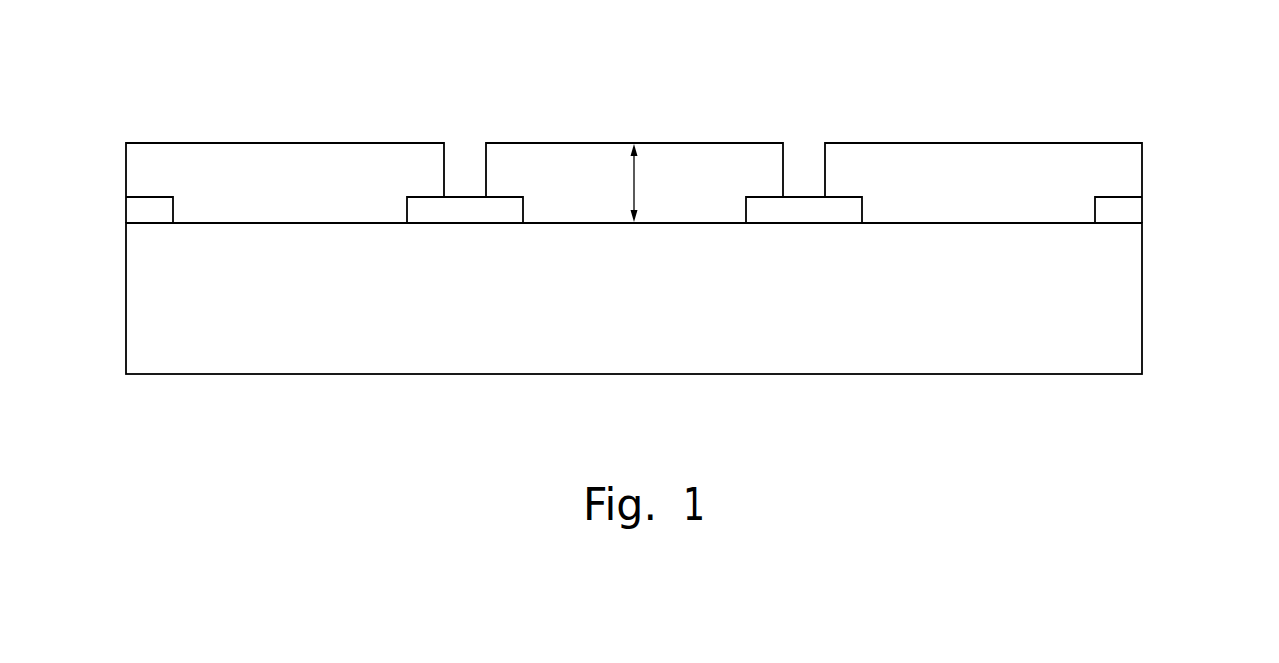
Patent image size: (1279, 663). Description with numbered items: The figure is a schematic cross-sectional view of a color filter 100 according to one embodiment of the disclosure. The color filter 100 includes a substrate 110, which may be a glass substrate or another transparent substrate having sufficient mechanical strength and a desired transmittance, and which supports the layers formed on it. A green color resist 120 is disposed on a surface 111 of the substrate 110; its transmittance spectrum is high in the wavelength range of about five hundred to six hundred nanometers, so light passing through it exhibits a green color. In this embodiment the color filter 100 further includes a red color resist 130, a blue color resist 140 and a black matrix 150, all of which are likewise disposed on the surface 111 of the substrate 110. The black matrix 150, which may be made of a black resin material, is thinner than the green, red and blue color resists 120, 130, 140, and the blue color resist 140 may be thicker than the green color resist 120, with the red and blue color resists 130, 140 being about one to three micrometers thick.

The color filter 100 is at (117, 66).
The substrate 110 is at (1119, 303).
The surface 111 is at (1029, 223).
The green color resist 120 is at (577, 162).
The red color resist 130 is at (263, 162).
The blue color resist 140 is at (888, 162).
The black matrix 150 is at (462, 207).